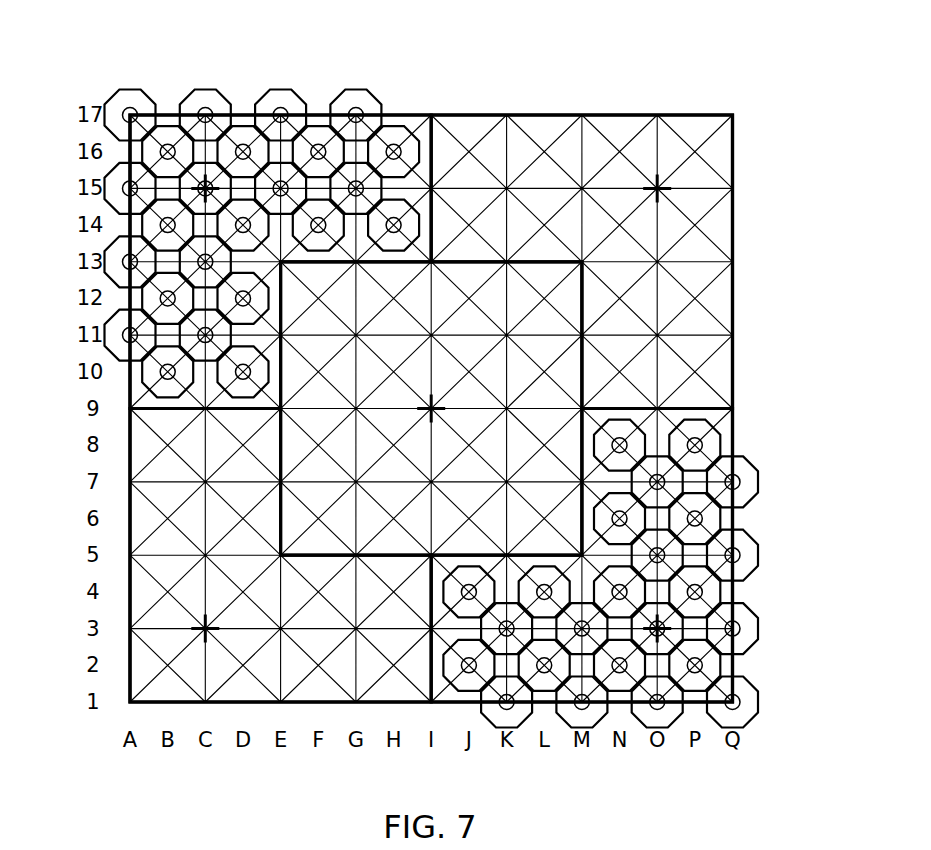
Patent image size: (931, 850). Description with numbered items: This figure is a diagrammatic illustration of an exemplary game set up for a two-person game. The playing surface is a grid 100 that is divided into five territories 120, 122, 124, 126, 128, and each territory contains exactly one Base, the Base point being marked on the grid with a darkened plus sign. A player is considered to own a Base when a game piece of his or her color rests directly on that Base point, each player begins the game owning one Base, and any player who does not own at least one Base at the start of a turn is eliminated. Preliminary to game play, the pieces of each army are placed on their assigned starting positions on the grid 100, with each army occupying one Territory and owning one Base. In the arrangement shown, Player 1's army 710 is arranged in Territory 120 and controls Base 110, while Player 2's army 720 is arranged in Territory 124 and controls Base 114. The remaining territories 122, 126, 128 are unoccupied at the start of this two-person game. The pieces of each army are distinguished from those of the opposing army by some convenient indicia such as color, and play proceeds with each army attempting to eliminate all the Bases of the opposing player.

The grid 100 is at (533, 63).
The Base 110 is at (203, 174).
The Base 114 is at (658, 643).
The Territory 120 is at (407, 120).
The Territory 122 is at (627, 241).
The Territory 124 is at (723, 420).
The Territory 126 is at (237, 536).
The Territory 128 is at (463, 465).
The Player 1's army 710 is at (241, 90).
The Player 2's army 720 is at (761, 667).